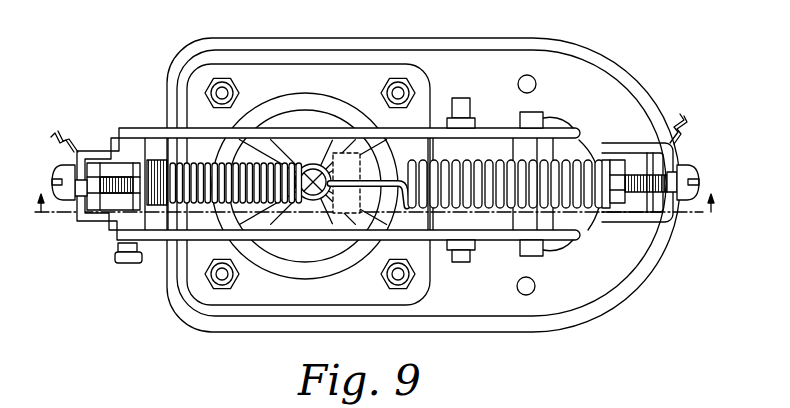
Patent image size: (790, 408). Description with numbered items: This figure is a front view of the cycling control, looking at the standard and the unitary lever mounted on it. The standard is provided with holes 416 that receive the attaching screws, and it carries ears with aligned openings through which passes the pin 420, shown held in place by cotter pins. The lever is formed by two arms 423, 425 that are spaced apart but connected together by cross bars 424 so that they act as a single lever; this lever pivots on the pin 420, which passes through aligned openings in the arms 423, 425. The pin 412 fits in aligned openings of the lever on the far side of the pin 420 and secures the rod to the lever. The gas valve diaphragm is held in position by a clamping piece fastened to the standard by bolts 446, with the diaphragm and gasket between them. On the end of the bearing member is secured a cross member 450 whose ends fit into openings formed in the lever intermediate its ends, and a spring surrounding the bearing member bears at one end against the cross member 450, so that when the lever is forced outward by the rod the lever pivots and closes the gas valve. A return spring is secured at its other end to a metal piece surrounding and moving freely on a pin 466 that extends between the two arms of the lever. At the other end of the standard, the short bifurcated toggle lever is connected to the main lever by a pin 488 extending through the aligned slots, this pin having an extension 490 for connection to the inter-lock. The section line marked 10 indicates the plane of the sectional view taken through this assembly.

The section line 10- 10 is at (373, 211).
The pin 412 is at (520, 255).
The holes 416 is at (533, 79).
The pin 420 is at (460, 265).
The arm 423 is at (570, 130).
The cross bars 424 is at (566, 152).
The arm 425 is at (573, 238).
The bolts 446 is at (217, 282).
The cross member 450 is at (283, 150).
The pin 466 is at (345, 220).
The pin 488 is at (128, 148).
The extension 490 is at (122, 263).